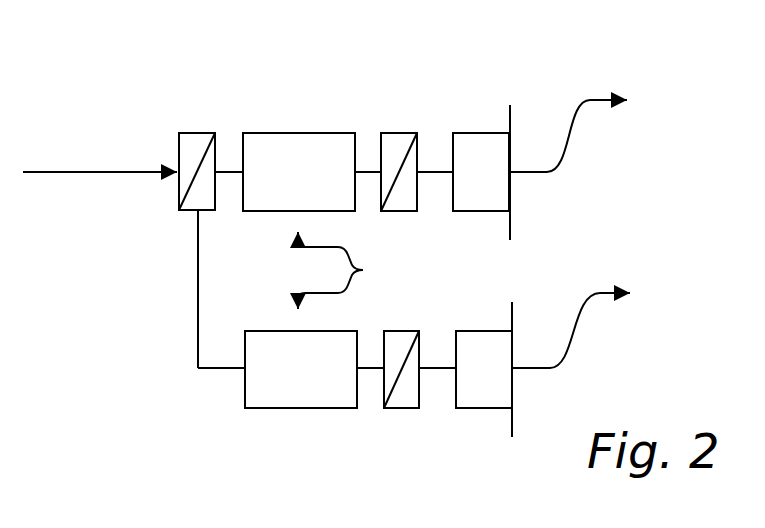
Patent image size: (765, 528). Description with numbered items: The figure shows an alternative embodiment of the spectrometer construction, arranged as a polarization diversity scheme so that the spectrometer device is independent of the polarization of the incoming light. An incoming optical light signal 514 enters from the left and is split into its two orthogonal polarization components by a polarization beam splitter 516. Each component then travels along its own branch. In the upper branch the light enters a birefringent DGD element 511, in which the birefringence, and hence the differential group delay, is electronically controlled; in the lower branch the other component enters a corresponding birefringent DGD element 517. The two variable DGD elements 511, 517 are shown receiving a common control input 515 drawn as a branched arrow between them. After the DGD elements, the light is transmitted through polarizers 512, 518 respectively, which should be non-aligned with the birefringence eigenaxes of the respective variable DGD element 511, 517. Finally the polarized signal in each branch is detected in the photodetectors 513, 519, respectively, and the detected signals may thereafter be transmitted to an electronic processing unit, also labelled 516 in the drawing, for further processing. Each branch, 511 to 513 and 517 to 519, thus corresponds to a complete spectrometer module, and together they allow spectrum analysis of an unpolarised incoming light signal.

The incoming optical light signal 514 is at (107, 158).
The polarization beam splitter 516 is at (197, 130).
The birefringent DGD element 511 is at (295, 128).
The polarizer 512 is at (397, 127).
The photodetector 513 is at (477, 127).
The control signal 515 is at (358, 270).
The birefringent DGD element 517 is at (303, 414).
The polarizer 518 is at (402, 414).
The photodetector 519 is at (482, 417).